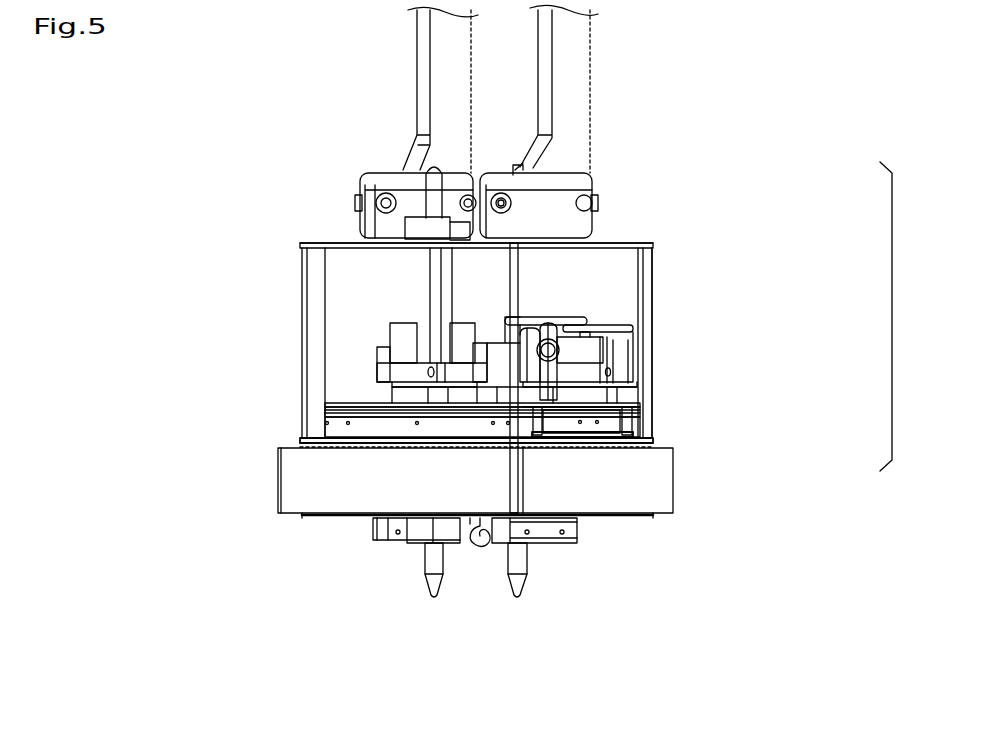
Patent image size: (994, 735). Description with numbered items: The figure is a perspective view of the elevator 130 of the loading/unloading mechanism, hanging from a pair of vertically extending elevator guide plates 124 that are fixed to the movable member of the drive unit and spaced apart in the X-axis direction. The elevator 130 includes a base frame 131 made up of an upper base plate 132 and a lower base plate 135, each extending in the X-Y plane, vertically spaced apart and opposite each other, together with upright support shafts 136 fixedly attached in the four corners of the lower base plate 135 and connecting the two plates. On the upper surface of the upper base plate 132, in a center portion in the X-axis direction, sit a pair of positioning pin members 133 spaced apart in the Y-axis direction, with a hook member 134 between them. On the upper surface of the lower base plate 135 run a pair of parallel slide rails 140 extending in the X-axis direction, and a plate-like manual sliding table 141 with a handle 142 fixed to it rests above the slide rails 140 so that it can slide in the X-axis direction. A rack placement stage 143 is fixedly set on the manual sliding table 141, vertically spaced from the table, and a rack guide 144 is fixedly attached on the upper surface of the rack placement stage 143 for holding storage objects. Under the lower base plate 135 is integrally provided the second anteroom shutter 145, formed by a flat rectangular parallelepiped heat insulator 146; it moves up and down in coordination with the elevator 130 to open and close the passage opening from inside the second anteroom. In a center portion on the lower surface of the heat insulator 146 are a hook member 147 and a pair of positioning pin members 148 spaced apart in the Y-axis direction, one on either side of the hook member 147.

The elevator guide plate 124 is at (437, 67).
The positioning pin member 133 is at (365, 186).
The hook member 134 is at (515, 220).
The elevator 130 is at (297, 265).
The upper base plate 132 is at (645, 245).
The support shaft 136 is at (650, 288).
The lower base plate 135 is at (648, 438).
The base frame 131 is at (906, 316).
The rack guide 144 is at (345, 362).
The manual sliding table 141 is at (342, 400).
The handle 142 is at (645, 347).
The rack placement stage 143 is at (645, 383).
The slide rail 140 is at (645, 422).
The heat insulator 146 is at (300, 478).
The second anteroom shutter 145 is at (677, 492).
The hook member 147 is at (470, 550).
The positioning pin member 148 is at (427, 563).